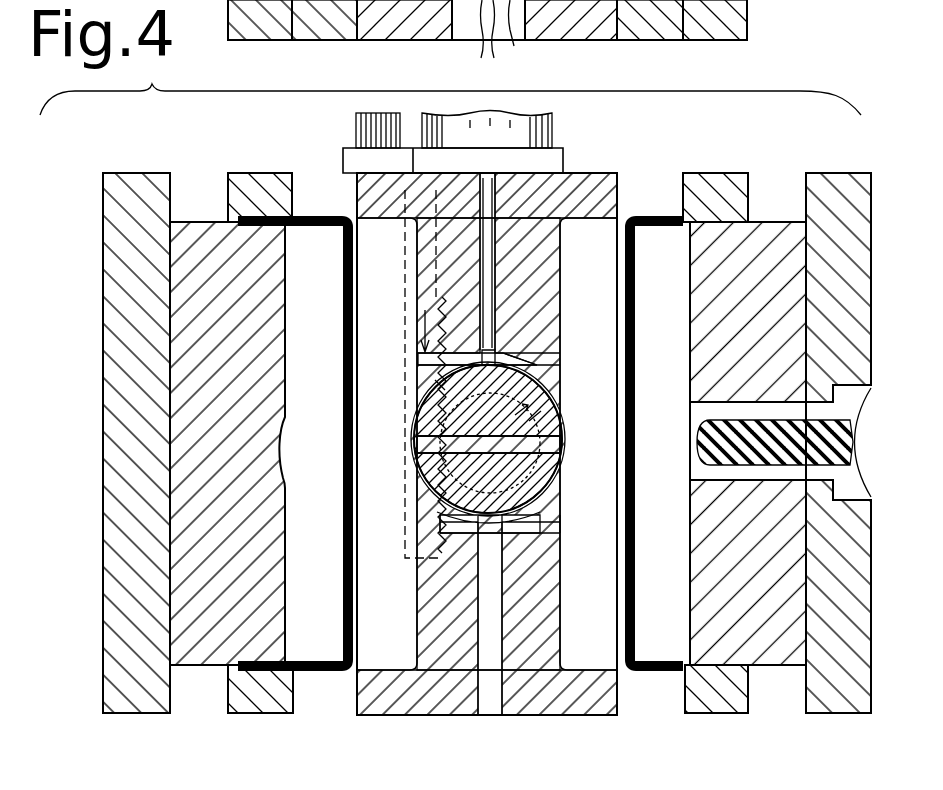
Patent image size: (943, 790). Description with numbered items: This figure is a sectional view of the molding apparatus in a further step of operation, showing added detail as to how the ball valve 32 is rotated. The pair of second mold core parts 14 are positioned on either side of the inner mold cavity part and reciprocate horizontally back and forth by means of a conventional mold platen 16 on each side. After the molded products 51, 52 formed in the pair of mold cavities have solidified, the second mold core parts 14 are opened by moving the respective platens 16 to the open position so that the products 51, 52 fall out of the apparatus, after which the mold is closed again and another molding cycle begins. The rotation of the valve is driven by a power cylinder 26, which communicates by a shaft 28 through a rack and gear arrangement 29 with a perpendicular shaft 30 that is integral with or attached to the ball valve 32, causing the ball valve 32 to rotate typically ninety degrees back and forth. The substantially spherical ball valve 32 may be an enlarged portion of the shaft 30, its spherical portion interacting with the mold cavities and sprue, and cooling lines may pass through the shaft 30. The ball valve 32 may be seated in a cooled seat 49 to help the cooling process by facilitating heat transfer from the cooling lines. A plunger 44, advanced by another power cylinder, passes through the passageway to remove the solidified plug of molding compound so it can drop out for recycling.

The second mold core part 14 is at (250, 403).
The mold platen 16 is at (127, 318).
The power cylinder 26 is at (372, 129).
The shaft 28 is at (428, 262).
The rack and gear arrangement 29 is at (437, 425).
The shaft 30 is at (530, 404).
The ball valve 32 is at (533, 483).
The plunger 44 is at (497, 230).
The cooled seat 49 is at (523, 525).
The molded product 51 is at (340, 315).
The molded product 52 is at (634, 352).